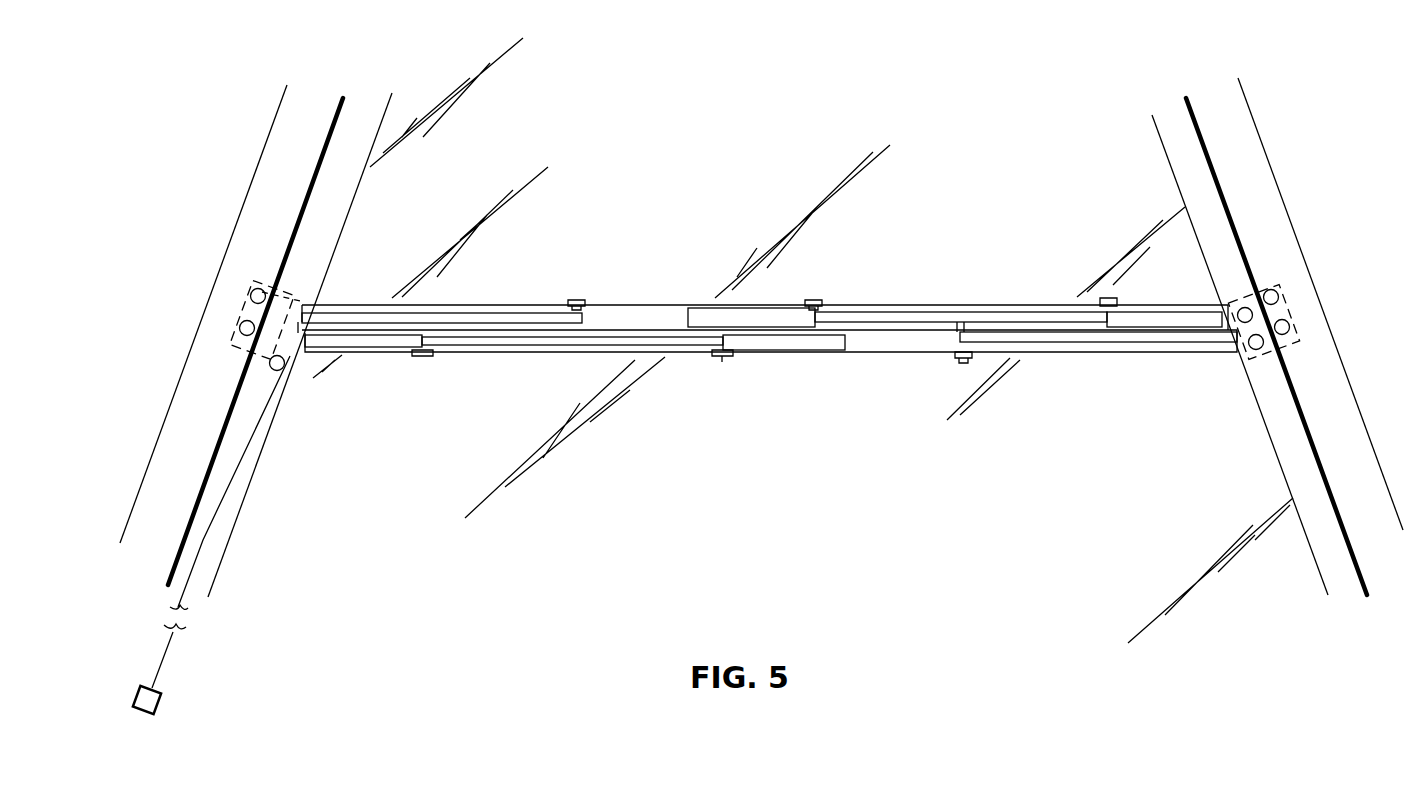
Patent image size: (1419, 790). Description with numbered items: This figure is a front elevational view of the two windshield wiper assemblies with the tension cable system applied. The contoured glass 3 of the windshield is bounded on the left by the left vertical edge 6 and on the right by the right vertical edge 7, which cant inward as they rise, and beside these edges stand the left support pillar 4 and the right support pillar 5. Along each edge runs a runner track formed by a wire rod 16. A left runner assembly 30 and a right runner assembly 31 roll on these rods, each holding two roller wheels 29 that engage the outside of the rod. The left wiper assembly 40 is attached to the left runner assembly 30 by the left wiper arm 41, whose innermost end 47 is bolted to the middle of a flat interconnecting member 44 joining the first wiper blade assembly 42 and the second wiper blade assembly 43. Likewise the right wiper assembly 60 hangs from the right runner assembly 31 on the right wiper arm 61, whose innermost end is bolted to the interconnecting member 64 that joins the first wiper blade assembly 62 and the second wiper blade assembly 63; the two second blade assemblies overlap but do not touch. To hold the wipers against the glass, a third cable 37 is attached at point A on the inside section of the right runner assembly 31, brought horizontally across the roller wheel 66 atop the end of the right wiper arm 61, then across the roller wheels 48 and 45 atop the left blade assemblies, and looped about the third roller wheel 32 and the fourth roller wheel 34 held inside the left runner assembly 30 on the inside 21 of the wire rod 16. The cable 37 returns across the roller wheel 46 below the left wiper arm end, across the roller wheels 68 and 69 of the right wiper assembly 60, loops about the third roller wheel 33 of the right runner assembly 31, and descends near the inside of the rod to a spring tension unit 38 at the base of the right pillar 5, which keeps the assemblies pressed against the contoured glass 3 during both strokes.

The contoured glass 3 is at (632, 513).
The left support pillar 4 is at (1248, 145).
The right support pillar 5 is at (285, 118).
The left vertical edge 6 is at (1166, 157).
The right vertical edge 7 is at (345, 225).
The wire rod 16 is at (338, 120).
The inside of the wire rod 21 is at (820, 146).
The roller wheels 29 is at (258, 288).
The left runner assembly 30 is at (1290, 314).
The right runner assembly 31 is at (238, 310).
The third roller wheel 32 is at (1243, 306).
The third roller wheel 33 is at (284, 370).
The fourth roller wheel 34 is at (1257, 360).
The third cable 37 is at (665, 302).
The spring tension unit 38 is at (160, 696).
The left wiper assembly 40 is at (973, 210).
The left wiper arm 41 is at (1177, 337).
The first wiper blade assembly 42 is at (1152, 320).
The second wiper blade assembly 43 is at (764, 314).
The flat interconnecting member 44 is at (905, 320).
The roller wheel 45 is at (1110, 298).
The roller wheel 46 is at (968, 358).
The innermost end 47 is at (955, 340).
The roller wheel 48 is at (826, 300).
The right wiper assembly 60 is at (536, 166).
The right wiper arm 61 is at (447, 316).
The first wiper blade assembly 62 is at (345, 343).
The second wiper blade assembly 63 is at (830, 340).
The flat interconnecting member 64 is at (535, 343).
The roller wheel 66 is at (577, 300).
The roller wheel 68 is at (730, 358).
The roller wheel 69 is at (420, 358).
The point A is at (297, 300).